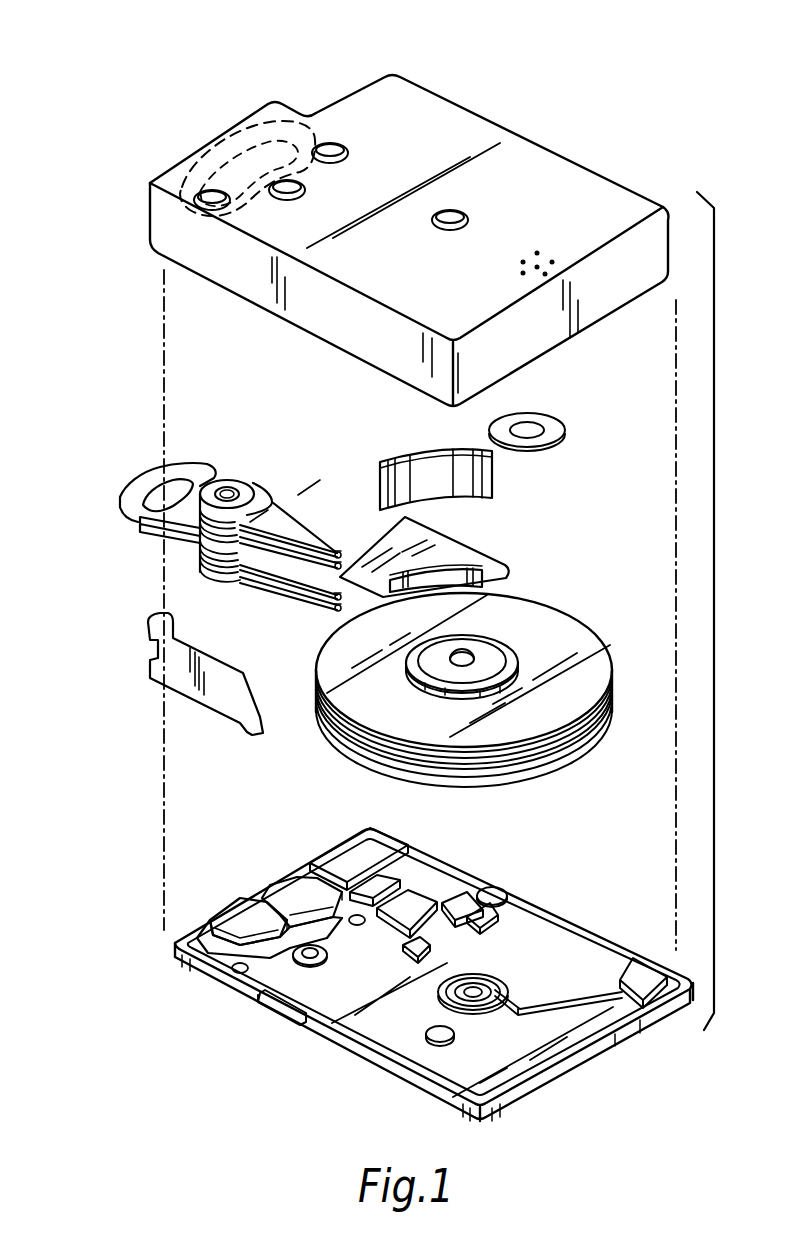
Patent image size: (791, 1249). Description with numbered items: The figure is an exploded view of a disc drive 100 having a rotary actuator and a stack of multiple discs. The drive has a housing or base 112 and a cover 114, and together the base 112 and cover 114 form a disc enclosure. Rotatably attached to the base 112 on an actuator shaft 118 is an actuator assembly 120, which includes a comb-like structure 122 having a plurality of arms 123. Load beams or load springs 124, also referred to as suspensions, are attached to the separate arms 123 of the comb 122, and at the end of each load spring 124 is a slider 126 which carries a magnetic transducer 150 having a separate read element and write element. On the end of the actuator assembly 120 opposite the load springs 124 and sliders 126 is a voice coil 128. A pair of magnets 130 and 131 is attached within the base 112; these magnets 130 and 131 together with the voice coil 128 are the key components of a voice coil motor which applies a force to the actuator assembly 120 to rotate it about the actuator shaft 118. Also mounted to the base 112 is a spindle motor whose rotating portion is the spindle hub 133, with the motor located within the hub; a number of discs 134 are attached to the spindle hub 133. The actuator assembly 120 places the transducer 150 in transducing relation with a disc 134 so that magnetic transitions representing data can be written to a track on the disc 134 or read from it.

The disc drive 100 is at (533, 48).
The base 112 is at (588, 945).
The cover 114 is at (548, 172).
The actuator shaft 118 is at (228, 488).
The actuator assembly 120 is at (183, 538).
The comb-like structure 122 is at (248, 590).
The arms 123 is at (276, 498).
The load springs 124 is at (293, 530).
The slider 126 is at (340, 553).
The voice coil 128 is at (140, 492).
The magnet 130 is at (240, 145).
The magnet 131 is at (230, 925).
The spindle hub 133 is at (468, 650).
The disc 134 is at (580, 636).
The magnetic transducer 150 is at (346, 568).